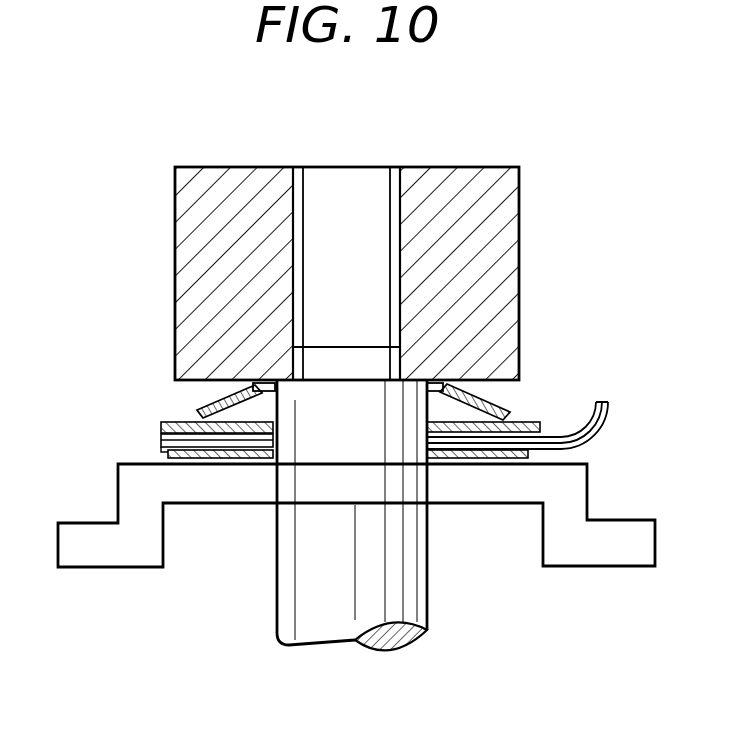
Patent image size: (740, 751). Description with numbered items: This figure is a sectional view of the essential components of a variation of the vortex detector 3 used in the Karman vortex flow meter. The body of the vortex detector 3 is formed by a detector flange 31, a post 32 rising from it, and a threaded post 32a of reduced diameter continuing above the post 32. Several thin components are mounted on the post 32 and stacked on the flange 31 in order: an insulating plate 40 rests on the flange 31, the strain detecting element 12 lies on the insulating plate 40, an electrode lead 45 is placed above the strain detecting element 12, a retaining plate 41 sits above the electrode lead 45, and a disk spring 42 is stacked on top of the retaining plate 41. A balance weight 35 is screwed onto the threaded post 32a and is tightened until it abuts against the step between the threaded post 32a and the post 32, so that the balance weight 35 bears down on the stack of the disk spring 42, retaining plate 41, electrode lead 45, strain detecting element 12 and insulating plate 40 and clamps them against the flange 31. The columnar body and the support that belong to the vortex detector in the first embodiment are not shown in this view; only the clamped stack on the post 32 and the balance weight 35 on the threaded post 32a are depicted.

The vortex detector 3 is at (597, 97).
The strain detecting element 12 is at (189, 465).
The detector flange 31 is at (243, 487).
The post 32 is at (412, 578).
The threaded post 32a is at (362, 176).
The balance weight 35 is at (480, 168).
The insulating plate 40 is at (517, 451).
The retaining plate 41 is at (168, 488).
The disk spring 42 is at (199, 413).
The electrode lead 45 is at (563, 428).